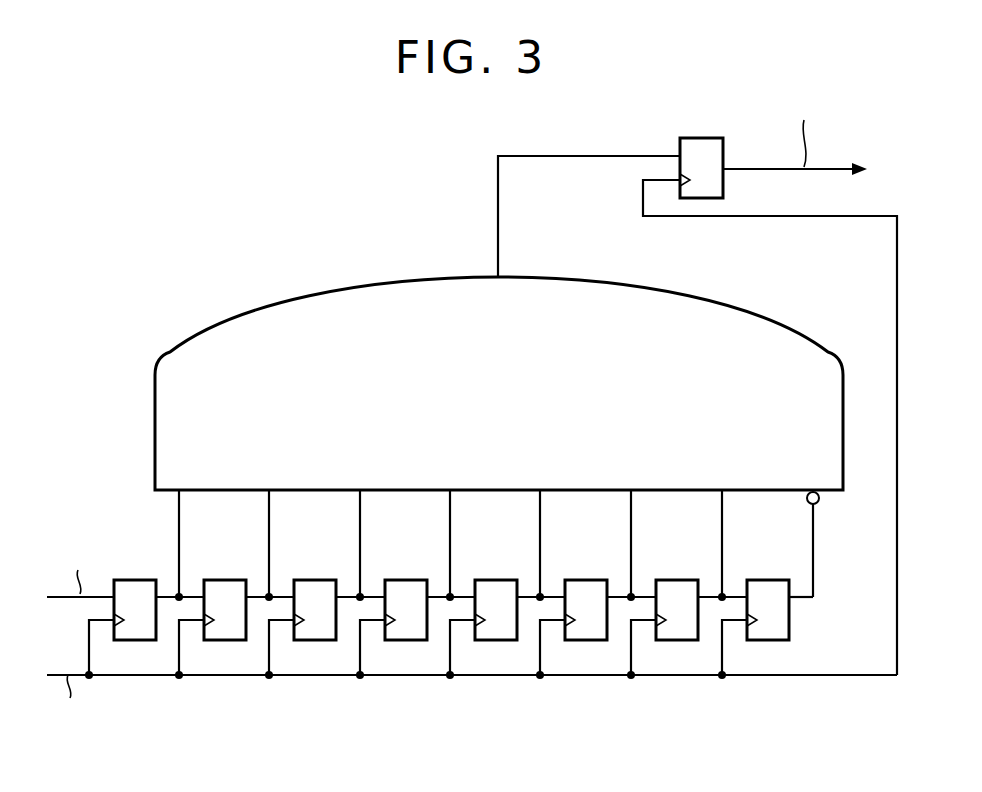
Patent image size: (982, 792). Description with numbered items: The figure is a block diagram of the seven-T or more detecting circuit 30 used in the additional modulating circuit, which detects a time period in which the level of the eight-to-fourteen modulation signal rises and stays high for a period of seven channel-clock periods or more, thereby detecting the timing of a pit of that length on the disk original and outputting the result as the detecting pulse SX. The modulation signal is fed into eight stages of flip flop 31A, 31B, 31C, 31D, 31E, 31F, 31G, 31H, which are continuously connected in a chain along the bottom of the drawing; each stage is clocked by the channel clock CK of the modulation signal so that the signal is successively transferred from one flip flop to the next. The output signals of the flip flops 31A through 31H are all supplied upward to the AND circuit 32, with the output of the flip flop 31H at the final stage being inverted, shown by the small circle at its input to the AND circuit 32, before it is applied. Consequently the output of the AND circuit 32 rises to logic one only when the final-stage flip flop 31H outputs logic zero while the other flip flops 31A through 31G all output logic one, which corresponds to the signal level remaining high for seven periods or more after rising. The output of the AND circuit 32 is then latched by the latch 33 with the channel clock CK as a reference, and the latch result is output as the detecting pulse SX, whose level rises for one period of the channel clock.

The 7T or more detecting circuit 30 is at (108, 248).
The flip flop 31A is at (131, 640).
The flip flop 31B is at (221, 640).
The flip flop 31C is at (311, 640).
The flip flop 31D is at (402, 640).
The flip flop 31E is at (492, 640).
The flip flop 31F is at (582, 640).
The flip flop 31G is at (673, 640).
The flip flop 31H is at (764, 640).
The AND circuit 32 is at (311, 291).
The latch 33 is at (703, 137).